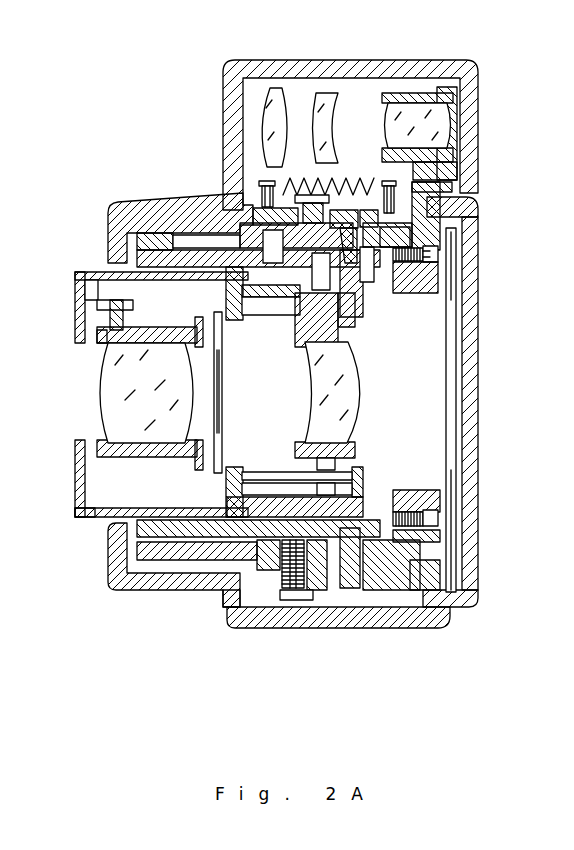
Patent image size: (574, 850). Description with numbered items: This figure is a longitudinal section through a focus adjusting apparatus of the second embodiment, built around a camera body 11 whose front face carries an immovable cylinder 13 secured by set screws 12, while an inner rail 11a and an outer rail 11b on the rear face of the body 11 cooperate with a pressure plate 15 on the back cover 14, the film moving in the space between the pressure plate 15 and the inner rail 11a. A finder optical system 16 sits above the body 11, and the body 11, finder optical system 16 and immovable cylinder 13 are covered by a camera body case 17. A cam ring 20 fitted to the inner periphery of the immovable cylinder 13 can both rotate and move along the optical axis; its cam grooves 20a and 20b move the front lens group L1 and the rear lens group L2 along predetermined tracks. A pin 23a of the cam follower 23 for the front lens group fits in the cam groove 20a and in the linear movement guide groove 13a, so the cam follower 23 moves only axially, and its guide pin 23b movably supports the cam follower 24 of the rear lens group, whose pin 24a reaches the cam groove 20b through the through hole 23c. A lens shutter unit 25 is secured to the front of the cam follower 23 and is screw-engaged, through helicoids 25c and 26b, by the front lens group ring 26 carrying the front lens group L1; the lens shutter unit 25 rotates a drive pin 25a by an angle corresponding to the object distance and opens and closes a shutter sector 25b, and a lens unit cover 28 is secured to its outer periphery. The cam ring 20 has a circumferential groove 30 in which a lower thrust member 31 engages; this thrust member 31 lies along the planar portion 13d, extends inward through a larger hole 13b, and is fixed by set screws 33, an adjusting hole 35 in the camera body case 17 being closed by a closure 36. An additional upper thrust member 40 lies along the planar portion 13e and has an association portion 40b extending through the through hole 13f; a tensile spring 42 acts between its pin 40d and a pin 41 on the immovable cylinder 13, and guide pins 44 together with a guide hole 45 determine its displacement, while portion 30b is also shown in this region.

The thrust member 40 is at (283, 205).
The pin 40d is at (224, 111).
The guide hole 45 is at (331, 158).
The finder optical system 16 is at (347, 97).
The guide pins 44 is at (278, 190).
The association portion 40b is at (389, 198).
The tensile spring 42 is at (345, 186).
The immovable cylinder 13 is at (112, 210).
The linear movement guide groove 13a is at (150, 238).
The cam ring 20 is at (185, 238).
The cam follower 23 is at (213, 255).
The pin 23a is at (255, 212).
The cam groove 20a is at (275, 265).
The cam groove 20b is at (318, 290).
The guide pin 23b is at (245, 313).
The lens shutter unit 25 is at (150, 293).
The drive pin 25a is at (97, 306).
The helicoid 25c is at (112, 315).
The front lens group ring 26 is at (125, 332).
The helicoid 26b is at (125, 343).
The front lens group L1 is at (100, 425).
The shutter sector 25b is at (222, 414).
The lens unit cover 28 is at (76, 515).
The pin 24a is at (330, 328).
The through hole 23c is at (355, 318).
The thrust member 31 is at (365, 270).
The cam follower 24 is at (357, 355).
The rear lens group L2 is at (352, 413).
The through hole 13f is at (398, 249).
The camera body 11 is at (430, 229).
The planar portion 13e is at (440, 220).
The pin 41 is at (465, 207).
The set screws 12 is at (410, 258).
The outer rail 11b is at (432, 252).
The inner rail 11a is at (428, 287).
The back cover 14 is at (478, 527).
The pressure plate 15 is at (455, 468).
The motor portion 30b is at (420, 565).
The circumferential groove 30 is at (348, 578).
The set screws 33 is at (290, 592).
The adjusting hole 35 is at (303, 612).
The closure 36 is at (325, 605).
The camera body case 17 is at (155, 586).
The planar portion 13d is at (260, 592).
The hole 13b is at (440, 627).